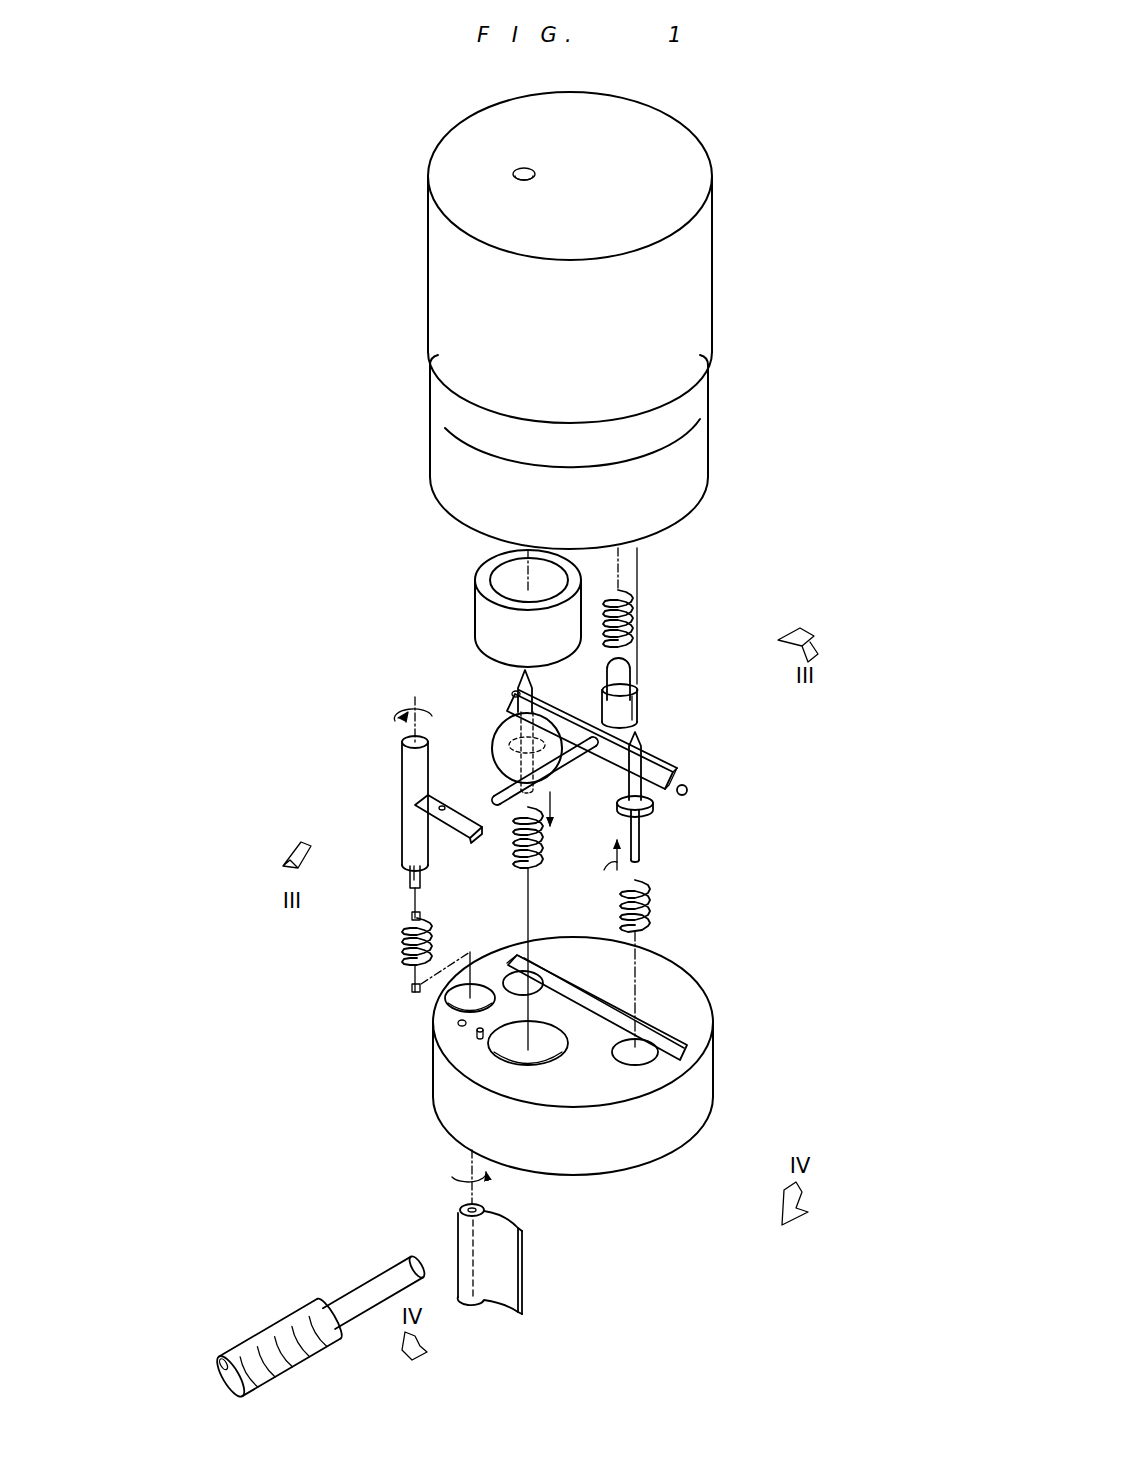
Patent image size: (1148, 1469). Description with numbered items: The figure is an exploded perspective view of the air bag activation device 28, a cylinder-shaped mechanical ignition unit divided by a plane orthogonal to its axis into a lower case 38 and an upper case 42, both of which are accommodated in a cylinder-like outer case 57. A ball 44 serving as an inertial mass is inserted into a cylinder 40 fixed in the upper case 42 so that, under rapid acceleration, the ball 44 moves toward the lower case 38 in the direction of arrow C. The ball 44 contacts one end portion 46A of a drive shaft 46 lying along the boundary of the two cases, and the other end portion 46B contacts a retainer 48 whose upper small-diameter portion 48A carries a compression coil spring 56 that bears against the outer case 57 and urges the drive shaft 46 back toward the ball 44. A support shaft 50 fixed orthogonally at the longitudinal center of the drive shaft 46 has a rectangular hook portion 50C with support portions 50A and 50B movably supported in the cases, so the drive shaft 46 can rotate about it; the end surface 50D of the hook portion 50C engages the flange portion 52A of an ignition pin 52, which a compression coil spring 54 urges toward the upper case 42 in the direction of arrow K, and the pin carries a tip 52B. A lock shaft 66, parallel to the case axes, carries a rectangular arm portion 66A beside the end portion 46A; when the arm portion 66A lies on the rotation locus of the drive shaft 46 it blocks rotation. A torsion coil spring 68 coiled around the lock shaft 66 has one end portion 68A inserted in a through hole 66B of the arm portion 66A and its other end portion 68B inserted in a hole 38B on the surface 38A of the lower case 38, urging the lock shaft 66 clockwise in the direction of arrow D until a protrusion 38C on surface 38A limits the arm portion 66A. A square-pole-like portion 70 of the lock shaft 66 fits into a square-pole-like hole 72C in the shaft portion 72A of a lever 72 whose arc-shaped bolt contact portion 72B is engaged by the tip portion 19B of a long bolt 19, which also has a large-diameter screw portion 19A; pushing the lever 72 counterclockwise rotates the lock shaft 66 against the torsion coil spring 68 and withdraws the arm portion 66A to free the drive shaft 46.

The long bolt 19 is at (322, 1316).
The screw portion 19A is at (310, 1280).
The tip portion 19B is at (375, 1291).
The air bag activation device 28 is at (770, 431).
The lower case 38 is at (714, 1037).
The surface of the lower case 38A is at (681, 983).
The hole 38B is at (458, 1024).
The protrusion 38C is at (479, 1038).
The cylinder 40 is at (476, 628).
The upper case 42 is at (708, 471).
The ball 44 is at (496, 734).
The drive shaft 46 is at (565, 776).
The end portion of the drive shaft 46A is at (507, 790).
The other end portion of the drive shaft 46B is at (618, 738).
The retainer 48 is at (598, 710).
The small-diameter portion 48A is at (641, 672).
The support shaft 50 is at (680, 773).
The support portion 50A is at (690, 790).
The support portion 50B is at (512, 693).
The hook portion 50C is at (601, 758).
The end surface 50D is at (664, 798).
The ignition pin 52 is at (640, 846).
The flange portion 52A is at (653, 807).
The plunger tip 52B is at (640, 743).
The compression coil spring 54 is at (546, 866).
The compression coil spring 56 is at (636, 630).
The outer case 57 is at (717, 285).
The lock shaft 66 is at (402, 815).
The arm portion 66A is at (456, 830).
The through hole 66B is at (441, 802).
The torsion coil spring 68 is at (430, 950).
The end portion of the torsion coil spring 68A is at (419, 917).
The other end portion of the torsion coil spring 68B is at (414, 990).
The square-pole-like portion 70 is at (410, 878).
The lever 72 is at (527, 1262).
The shaft portion 72A is at (458, 1243).
The bolt contact portion 72B is at (524, 1291).
The square-pole-like hole 72C is at (467, 1207).
The arrow C is at (559, 818).
The arrow D is at (395, 721).
The arrow K is at (606, 867).